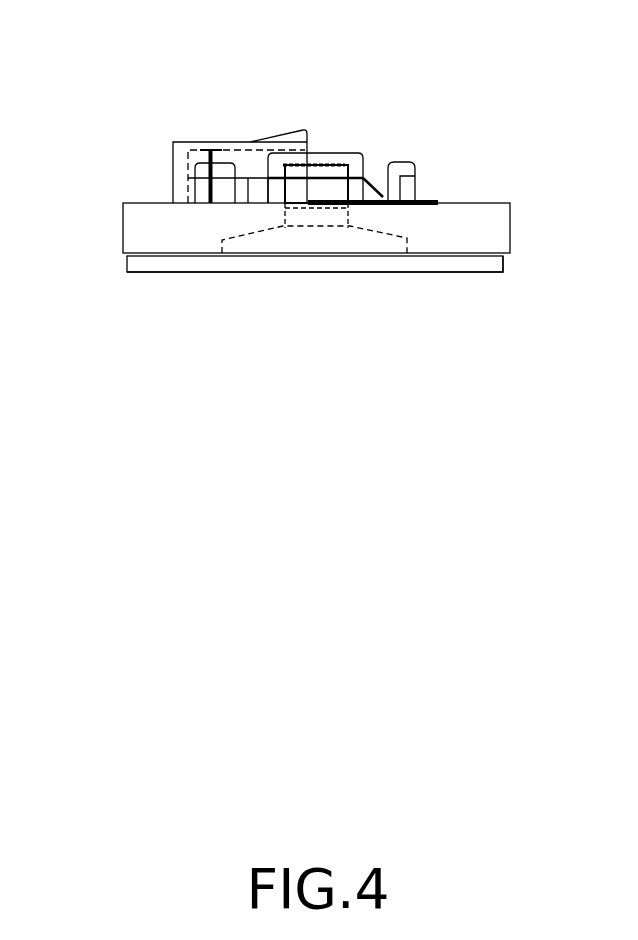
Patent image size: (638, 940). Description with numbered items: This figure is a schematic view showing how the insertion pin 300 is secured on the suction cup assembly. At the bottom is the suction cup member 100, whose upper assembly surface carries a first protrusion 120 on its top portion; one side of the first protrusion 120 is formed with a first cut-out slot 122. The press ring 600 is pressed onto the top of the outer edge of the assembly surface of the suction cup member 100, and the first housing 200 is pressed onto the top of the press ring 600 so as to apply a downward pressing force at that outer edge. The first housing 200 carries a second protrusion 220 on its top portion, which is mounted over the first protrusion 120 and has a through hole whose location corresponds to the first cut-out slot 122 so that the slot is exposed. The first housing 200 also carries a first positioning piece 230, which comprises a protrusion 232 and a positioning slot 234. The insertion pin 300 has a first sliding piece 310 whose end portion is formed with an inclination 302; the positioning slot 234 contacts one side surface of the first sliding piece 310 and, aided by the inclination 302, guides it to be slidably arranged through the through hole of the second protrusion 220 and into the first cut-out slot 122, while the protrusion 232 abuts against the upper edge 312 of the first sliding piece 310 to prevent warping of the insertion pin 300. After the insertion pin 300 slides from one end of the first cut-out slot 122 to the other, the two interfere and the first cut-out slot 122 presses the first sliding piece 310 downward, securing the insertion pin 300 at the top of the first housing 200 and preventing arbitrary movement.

The suction cup member 100 is at (345, 262).
The first protrusion 120 is at (283, 222).
The first cut-out slot 122 is at (332, 160).
The first housing 200 is at (130, 238).
The second protrusion 220 is at (340, 158).
The first positioning piece 230 is at (200, 190).
The protrusion 232 is at (222, 168).
The positioning slot 234 is at (220, 192).
The insertion pin 300 is at (197, 147).
The inclination 302 is at (376, 194).
The first sliding piece 310 is at (382, 196).
The upper edge 312 is at (213, 160).
The press ring 600 is at (478, 258).